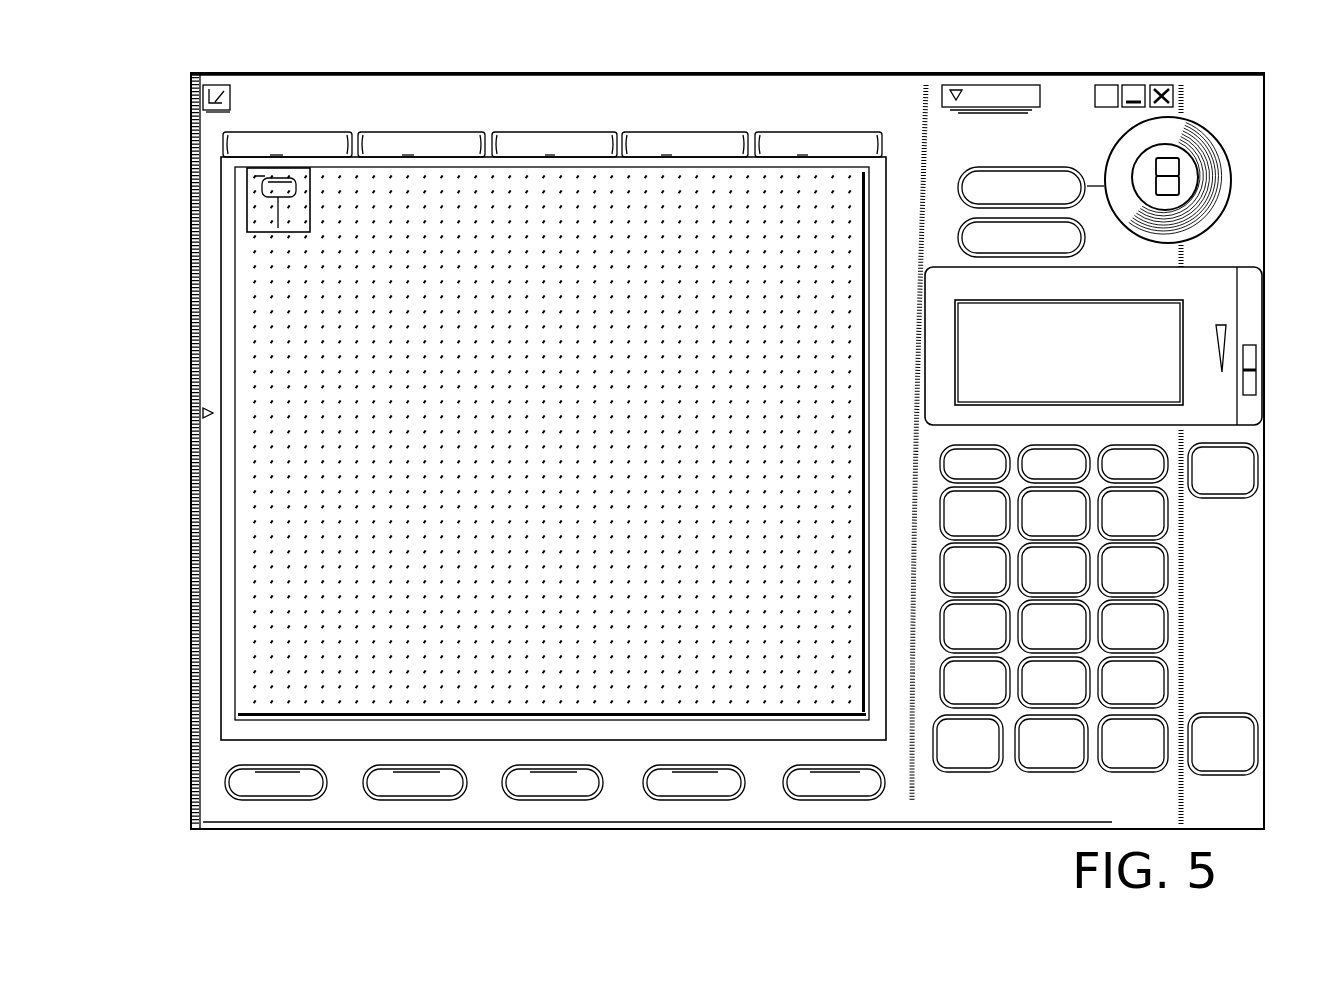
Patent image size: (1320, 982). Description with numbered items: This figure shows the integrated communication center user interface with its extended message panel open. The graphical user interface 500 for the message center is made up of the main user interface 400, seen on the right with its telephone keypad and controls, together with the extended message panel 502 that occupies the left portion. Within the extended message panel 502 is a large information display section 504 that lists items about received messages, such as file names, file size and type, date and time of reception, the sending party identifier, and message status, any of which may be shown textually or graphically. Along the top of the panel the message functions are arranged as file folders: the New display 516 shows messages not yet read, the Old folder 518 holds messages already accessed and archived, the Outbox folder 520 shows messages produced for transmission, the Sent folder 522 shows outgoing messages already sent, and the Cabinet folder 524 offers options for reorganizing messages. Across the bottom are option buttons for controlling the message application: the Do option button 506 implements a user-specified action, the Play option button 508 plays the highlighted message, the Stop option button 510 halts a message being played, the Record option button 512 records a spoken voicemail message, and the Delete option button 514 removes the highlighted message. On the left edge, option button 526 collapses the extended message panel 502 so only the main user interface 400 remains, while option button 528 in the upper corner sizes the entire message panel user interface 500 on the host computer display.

The main user interface 400 is at (1015, 76).
The graphical user interface 500 is at (1284, 182).
The extended message panel 502 is at (548, 108).
The information display section 504 is at (295, 595).
The Do option button 506 is at (260, 800).
The Play option button 508 is at (393, 800).
The Stop option button 510 is at (524, 800).
The Record option button 512 is at (668, 800).
The Delete option button 514 is at (803, 800).
The New folder display 516 is at (337, 133).
The Old folder 518 is at (460, 133).
The Outbox folder 520 is at (604, 133).
The Sent folder 522 is at (733, 133).
The Cabinet folder 524 is at (870, 133).
The collapse option button 526 is at (203, 413).
The sizing option button 528 is at (203, 103).